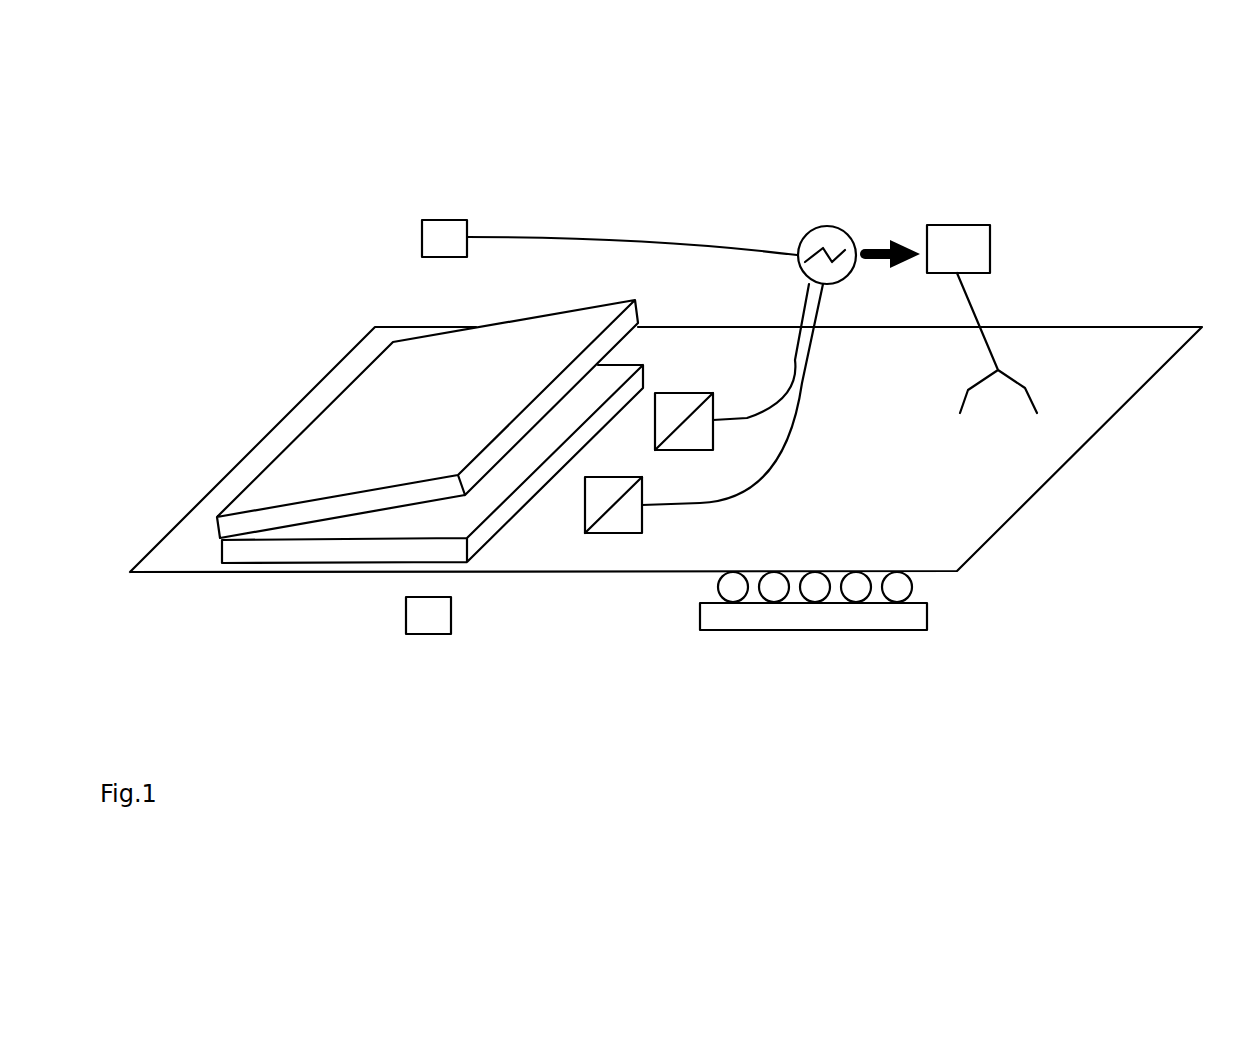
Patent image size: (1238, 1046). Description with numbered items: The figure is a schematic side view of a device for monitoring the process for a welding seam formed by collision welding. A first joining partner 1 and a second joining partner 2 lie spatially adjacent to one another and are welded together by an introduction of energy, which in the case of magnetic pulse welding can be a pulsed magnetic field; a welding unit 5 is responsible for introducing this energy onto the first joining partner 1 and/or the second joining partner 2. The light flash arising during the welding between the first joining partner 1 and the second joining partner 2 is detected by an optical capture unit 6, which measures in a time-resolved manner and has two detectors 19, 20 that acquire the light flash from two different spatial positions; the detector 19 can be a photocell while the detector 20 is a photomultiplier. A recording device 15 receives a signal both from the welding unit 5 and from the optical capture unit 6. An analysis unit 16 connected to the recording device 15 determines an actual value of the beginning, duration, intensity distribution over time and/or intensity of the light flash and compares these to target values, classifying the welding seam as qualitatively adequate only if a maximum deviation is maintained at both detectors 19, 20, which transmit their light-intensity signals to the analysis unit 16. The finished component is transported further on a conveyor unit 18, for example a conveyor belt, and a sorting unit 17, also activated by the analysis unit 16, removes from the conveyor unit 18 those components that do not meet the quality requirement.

The first joining partner 1 is at (380, 550).
The second joining partner 2 is at (343, 505).
The welding unit 5 is at (455, 218).
The optical capture unit 6 is at (671, 526).
The recording device 15 is at (828, 226).
The analysis unit 16 is at (957, 228).
The sorting unit 17 is at (1015, 380).
The conveyor unit 18 is at (997, 530).
The detector 19 is at (697, 450).
The detector 20 is at (615, 533).